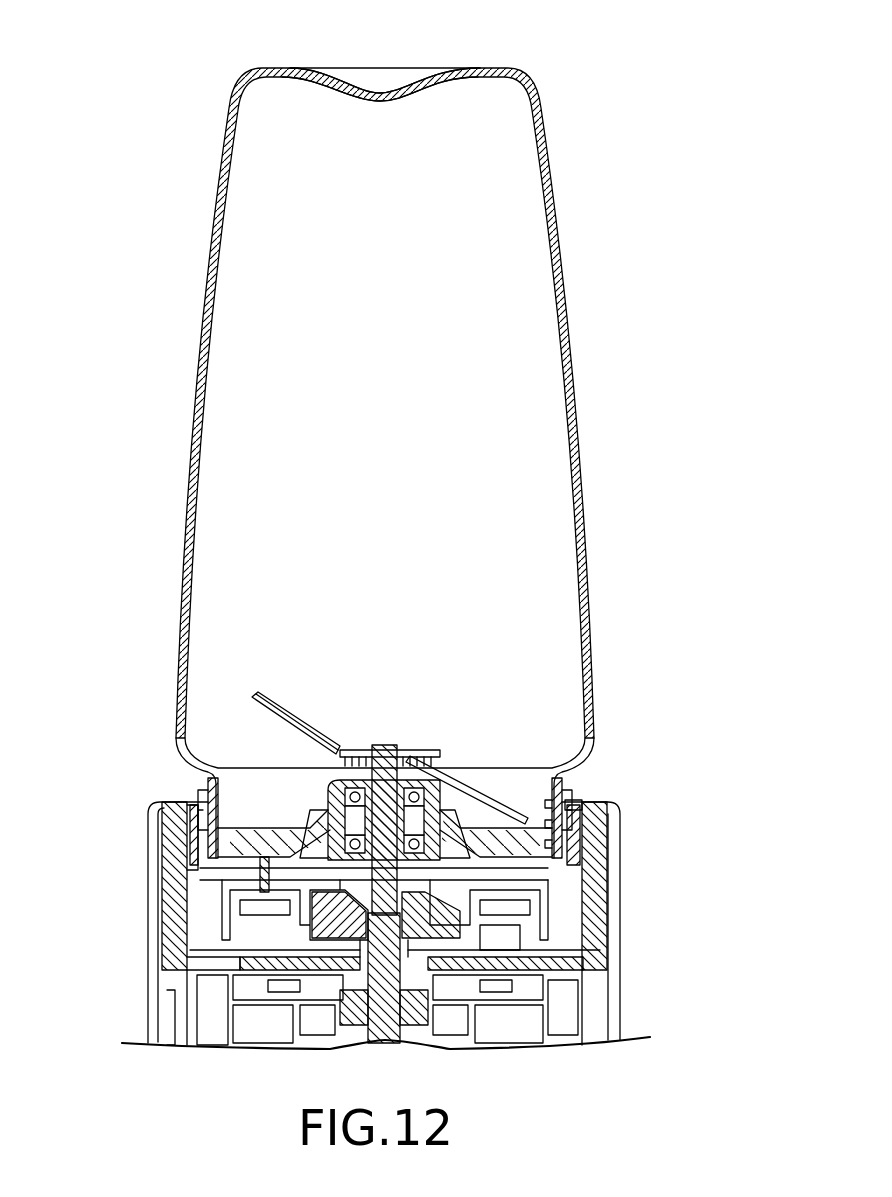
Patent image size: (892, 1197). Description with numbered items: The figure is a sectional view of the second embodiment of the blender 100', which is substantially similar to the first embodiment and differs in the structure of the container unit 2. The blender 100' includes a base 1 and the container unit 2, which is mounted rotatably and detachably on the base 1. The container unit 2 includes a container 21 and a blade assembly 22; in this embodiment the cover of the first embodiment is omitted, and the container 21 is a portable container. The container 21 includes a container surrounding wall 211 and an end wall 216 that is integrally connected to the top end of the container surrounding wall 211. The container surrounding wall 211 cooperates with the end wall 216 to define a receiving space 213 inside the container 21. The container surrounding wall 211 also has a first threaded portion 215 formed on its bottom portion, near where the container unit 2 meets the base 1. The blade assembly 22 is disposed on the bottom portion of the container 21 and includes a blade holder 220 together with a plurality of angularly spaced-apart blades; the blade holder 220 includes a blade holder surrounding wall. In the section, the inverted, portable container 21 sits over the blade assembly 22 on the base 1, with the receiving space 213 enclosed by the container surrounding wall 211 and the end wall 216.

The blender 100' is at (434, 527).
The container unit 2 is at (590, 183).
The container 21 is at (565, 250).
The container surrounding wall 211 is at (572, 409).
The receiving space 213 is at (490, 350).
The end wall 216 is at (425, 85).
The first threaded portion 215 is at (583, 800).
The base 1 is at (625, 934).
The blade assembly 22 is at (572, 845).
The blade holder 220 is at (386, 832).